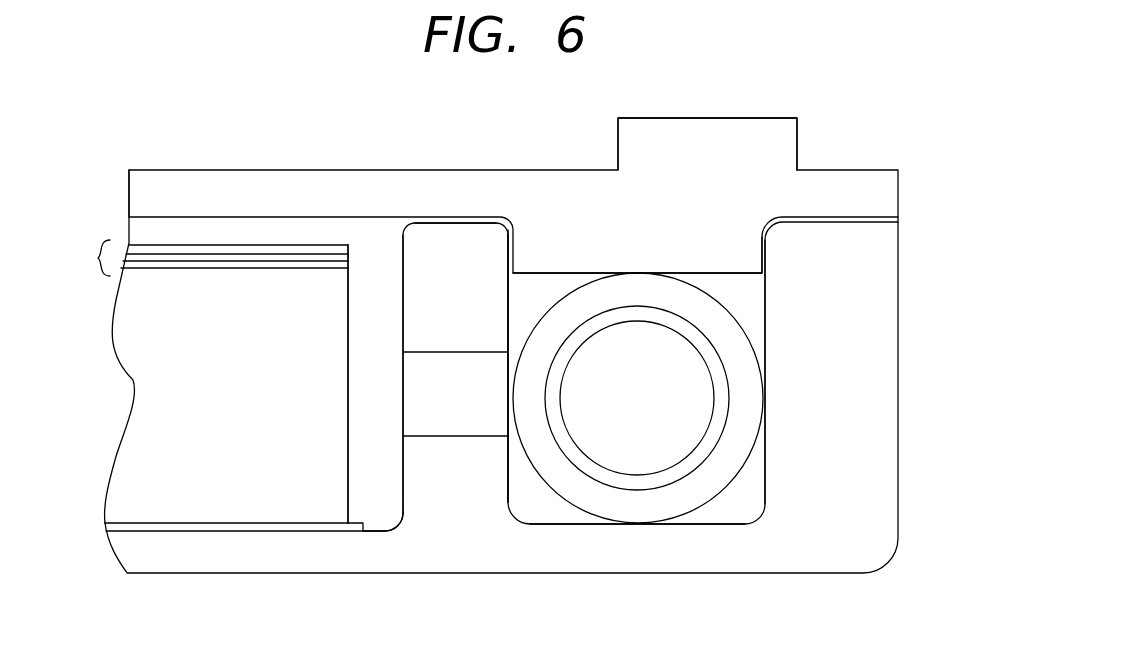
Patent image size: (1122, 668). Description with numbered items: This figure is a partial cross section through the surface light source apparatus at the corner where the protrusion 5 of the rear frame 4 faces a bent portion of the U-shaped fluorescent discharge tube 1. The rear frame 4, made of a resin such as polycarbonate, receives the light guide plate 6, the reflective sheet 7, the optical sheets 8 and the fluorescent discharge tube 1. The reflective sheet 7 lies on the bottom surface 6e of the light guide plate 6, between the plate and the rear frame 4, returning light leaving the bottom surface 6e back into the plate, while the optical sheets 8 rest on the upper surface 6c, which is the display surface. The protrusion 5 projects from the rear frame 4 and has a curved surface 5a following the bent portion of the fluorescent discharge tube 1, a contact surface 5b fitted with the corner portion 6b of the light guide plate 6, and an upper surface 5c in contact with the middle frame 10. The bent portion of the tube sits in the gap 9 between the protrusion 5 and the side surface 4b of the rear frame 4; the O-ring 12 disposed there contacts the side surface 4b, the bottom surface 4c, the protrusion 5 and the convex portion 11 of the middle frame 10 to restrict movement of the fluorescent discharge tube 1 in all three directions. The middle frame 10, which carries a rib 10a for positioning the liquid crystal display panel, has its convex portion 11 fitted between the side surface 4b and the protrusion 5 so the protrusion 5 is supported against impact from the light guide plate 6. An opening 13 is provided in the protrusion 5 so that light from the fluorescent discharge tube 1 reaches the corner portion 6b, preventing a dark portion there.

The fluorescent discharge tube 1 is at (600, 473).
The rear frame 4 is at (843, 543).
The side surface of the rear frame 4b is at (791, 458).
The bottom surface of the rear frame 4c is at (733, 525).
The protrusion 5 is at (437, 250).
The curved surface 5a is at (508, 297).
The contact surface 5b is at (403, 297).
The upper surface of the protrusion 5c is at (458, 218).
The light guide plate 6 is at (167, 282).
The corner portion of the light guide plate 6b is at (348, 292).
The upper surface of the light guide plate 6c is at (202, 268).
The bottom surface of the light guide plate 6e is at (307, 523).
The reflective sheet 7 is at (162, 528).
The optical sheets 8 is at (100, 258).
The gap 9 is at (528, 502).
The middle frame 10 is at (732, 185).
The rib 10a is at (681, 137).
The convex portion 11 is at (593, 250).
The O-ring 12 is at (563, 482).
The opening 13 is at (442, 412).